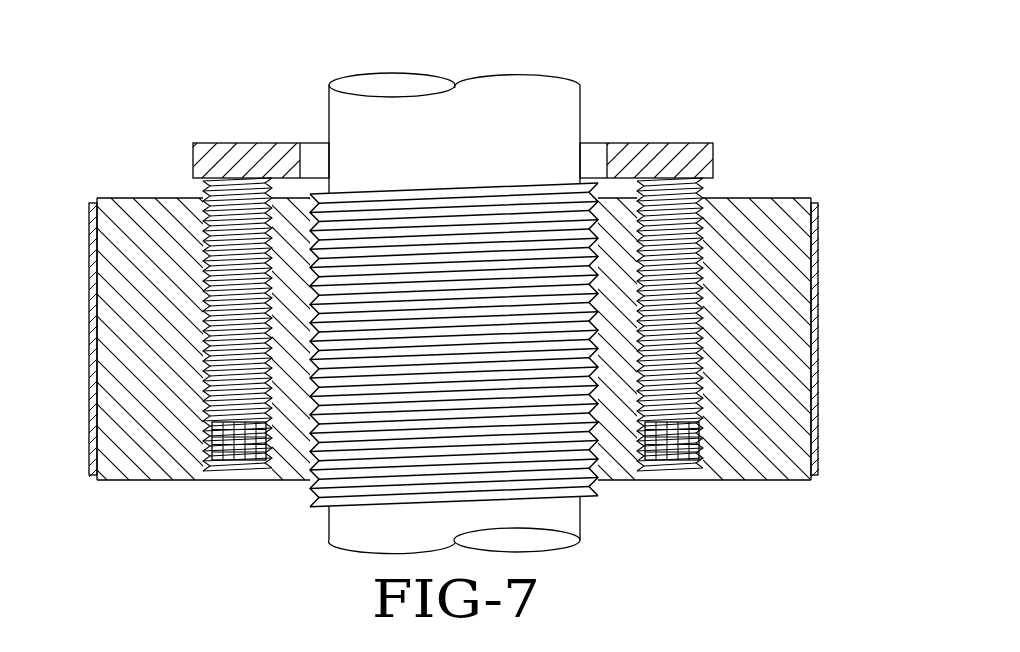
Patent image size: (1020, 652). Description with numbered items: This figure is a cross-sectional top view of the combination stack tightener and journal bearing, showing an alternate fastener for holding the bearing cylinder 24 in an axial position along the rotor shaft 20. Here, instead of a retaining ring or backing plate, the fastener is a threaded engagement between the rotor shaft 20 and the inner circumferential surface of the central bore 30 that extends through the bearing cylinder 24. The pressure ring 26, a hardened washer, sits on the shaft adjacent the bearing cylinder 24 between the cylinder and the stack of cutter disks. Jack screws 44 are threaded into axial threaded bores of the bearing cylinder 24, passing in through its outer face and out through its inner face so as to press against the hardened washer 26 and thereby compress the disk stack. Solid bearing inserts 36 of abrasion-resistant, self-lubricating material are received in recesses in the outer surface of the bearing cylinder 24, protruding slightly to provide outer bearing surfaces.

The rotor shaft 20 is at (518, 96).
The bearing cylinder 24 is at (138, 217).
The pressure ring 26 is at (665, 150).
The central bore 30 is at (312, 232).
The solid bearing insert 36 is at (92, 247).
The jack screw 44 is at (237, 460).